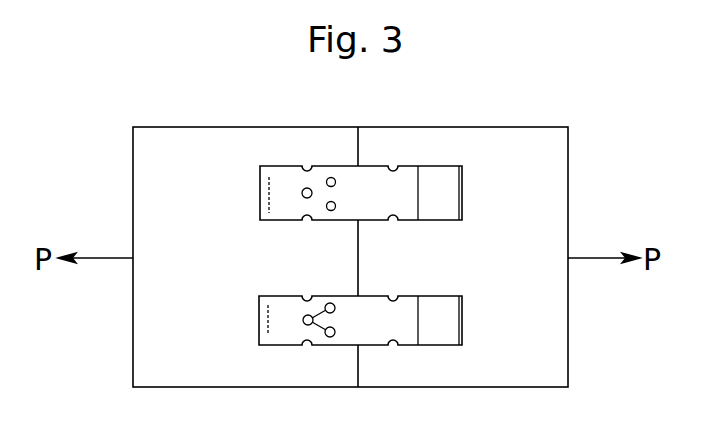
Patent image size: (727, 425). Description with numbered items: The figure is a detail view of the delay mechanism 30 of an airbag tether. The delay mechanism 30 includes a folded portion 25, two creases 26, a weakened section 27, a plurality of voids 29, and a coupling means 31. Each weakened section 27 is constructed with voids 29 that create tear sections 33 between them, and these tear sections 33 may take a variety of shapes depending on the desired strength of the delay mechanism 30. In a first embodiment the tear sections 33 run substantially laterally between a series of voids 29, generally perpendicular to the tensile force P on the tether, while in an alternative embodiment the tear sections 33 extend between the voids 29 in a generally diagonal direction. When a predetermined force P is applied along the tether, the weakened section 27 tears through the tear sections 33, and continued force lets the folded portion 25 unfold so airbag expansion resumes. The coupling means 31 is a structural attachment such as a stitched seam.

The folded portion 25 is at (376, 182).
The crease 26 is at (358, 144).
The weakened section 27 is at (281, 309).
The void 29 is at (304, 322).
The delay mechanism 30 is at (276, 164).
The coupling means 31 is at (267, 322).
The tear section 33 is at (301, 190).